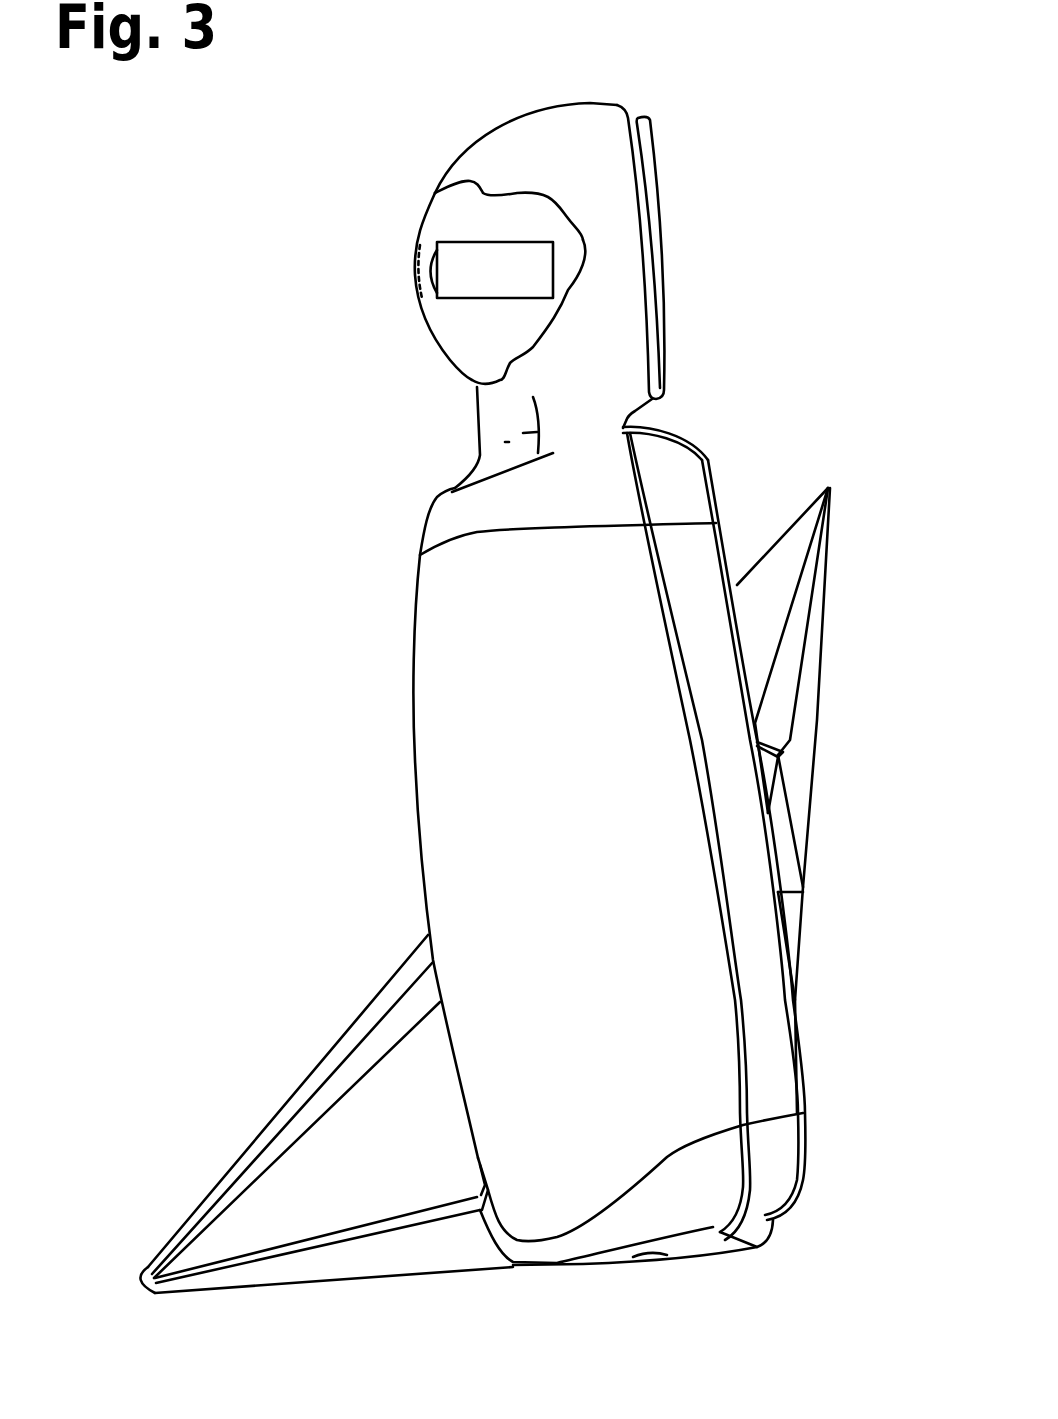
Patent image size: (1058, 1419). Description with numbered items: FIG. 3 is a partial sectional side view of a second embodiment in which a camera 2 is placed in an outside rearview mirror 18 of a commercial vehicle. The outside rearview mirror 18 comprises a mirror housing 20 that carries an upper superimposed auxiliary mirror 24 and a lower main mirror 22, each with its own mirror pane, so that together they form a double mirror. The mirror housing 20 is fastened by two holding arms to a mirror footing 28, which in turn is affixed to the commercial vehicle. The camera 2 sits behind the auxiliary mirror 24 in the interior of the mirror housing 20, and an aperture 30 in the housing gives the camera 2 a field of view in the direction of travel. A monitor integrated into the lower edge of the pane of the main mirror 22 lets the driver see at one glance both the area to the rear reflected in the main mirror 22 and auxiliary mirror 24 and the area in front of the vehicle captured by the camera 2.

The camera 2 is at (498, 286).
The outside rearview mirror 18 is at (829, 270).
The mirror housing 20 is at (598, 947).
The main mirror 22 is at (822, 1037).
The auxiliary mirror 24 is at (657, 163).
The mirror footing 28 is at (300, 1157).
The aperture 30 is at (418, 290).